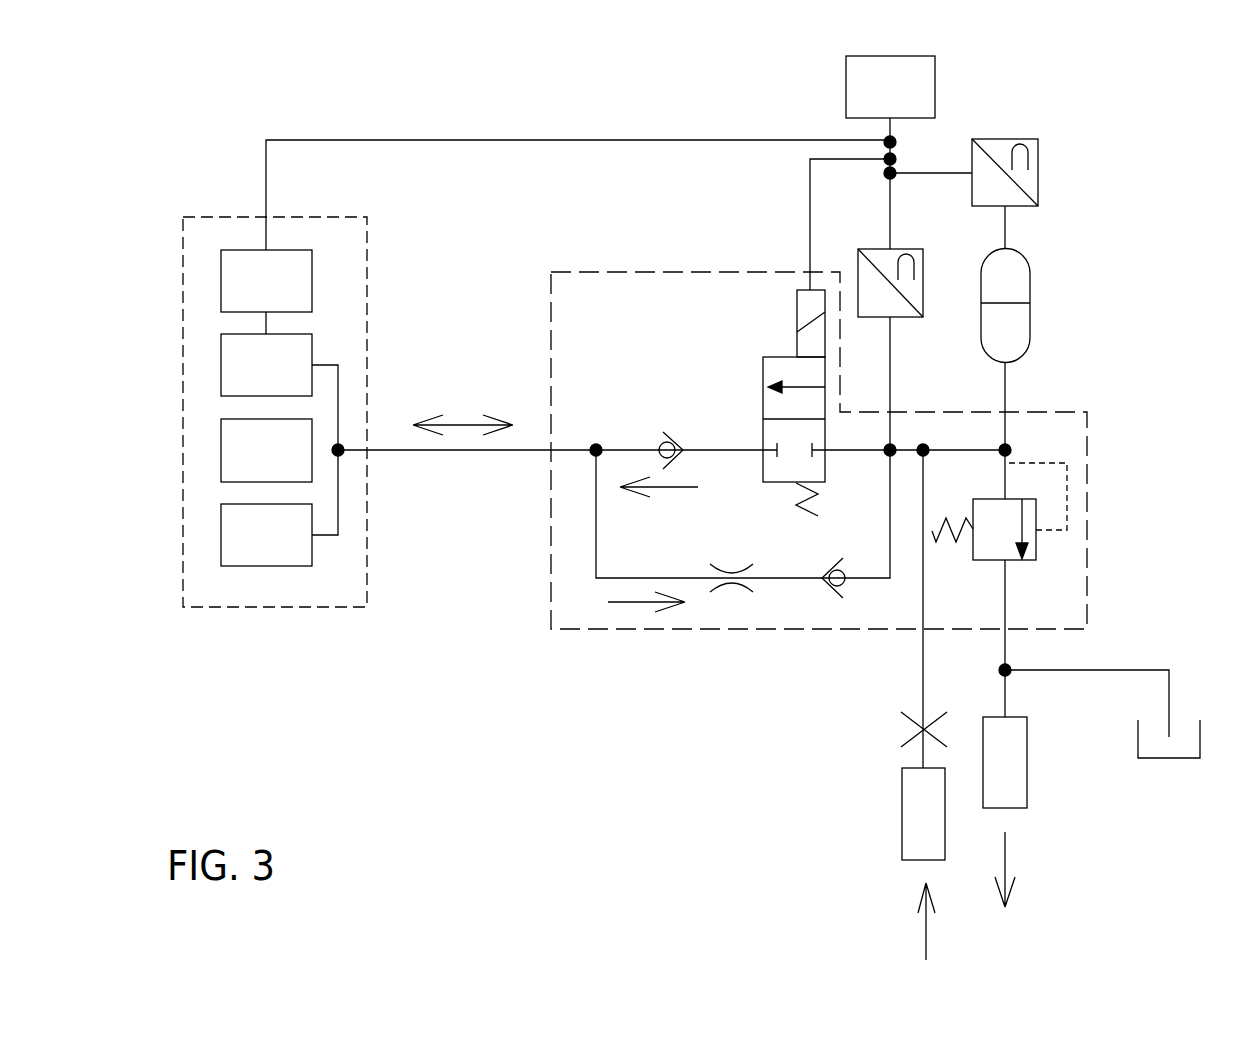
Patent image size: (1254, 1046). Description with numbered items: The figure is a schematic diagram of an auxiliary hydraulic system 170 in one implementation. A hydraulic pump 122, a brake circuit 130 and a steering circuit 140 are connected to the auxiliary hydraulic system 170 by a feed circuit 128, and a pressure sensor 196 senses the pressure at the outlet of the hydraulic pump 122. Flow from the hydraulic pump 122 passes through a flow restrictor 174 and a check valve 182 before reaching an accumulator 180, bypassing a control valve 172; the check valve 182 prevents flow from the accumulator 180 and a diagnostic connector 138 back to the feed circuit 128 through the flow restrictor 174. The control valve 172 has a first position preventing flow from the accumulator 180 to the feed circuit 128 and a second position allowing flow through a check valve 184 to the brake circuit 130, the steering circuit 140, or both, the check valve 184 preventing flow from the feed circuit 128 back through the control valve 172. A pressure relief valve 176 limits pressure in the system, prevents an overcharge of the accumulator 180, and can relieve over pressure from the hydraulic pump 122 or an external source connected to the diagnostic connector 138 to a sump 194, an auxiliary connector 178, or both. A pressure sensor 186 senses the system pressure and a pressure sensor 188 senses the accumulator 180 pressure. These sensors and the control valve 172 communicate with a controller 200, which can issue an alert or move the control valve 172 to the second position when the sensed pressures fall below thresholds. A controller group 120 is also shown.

The controller 120 is at (205, 214).
The hydraulic pump 122 is at (288, 381).
The feed circuit 128 is at (453, 345).
The brake circuit 130 is at (288, 462).
The diagnostic connector 138 is at (916, 832).
The steering circuit 140 is at (288, 547).
The auxiliary hydraulic system 170 is at (492, 97).
The control valve 172 is at (775, 355).
The flow restrictor 174 is at (718, 588).
The pressure relief valve 176 is at (1036, 547).
The auxiliary connector 178 is at (1003, 765).
The accumulator 180 is at (1030, 287).
The check valve 182 is at (843, 596).
The check valve 184 is at (673, 428).
The pressure sensor 186 is at (912, 249).
The pressure sensor 188 is at (1038, 177).
The sump 194 is at (1152, 758).
The pressure sensor 196 is at (288, 296).
The controller 200 is at (915, 99).